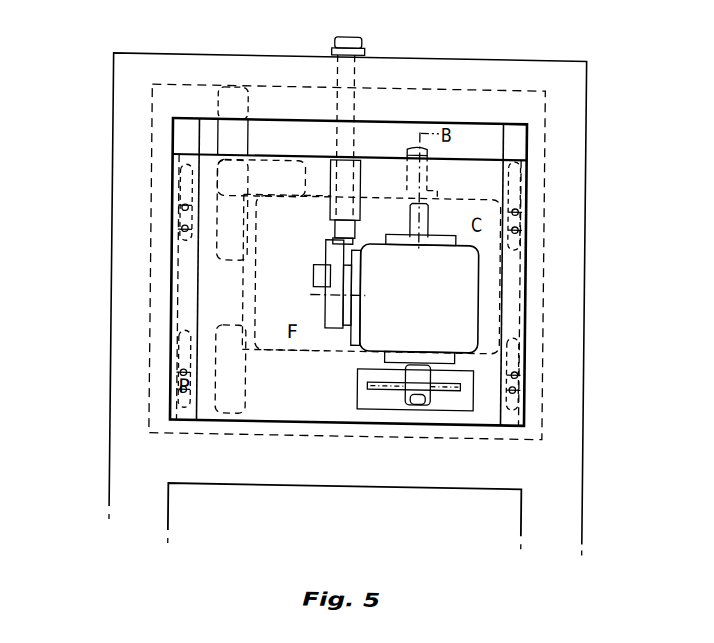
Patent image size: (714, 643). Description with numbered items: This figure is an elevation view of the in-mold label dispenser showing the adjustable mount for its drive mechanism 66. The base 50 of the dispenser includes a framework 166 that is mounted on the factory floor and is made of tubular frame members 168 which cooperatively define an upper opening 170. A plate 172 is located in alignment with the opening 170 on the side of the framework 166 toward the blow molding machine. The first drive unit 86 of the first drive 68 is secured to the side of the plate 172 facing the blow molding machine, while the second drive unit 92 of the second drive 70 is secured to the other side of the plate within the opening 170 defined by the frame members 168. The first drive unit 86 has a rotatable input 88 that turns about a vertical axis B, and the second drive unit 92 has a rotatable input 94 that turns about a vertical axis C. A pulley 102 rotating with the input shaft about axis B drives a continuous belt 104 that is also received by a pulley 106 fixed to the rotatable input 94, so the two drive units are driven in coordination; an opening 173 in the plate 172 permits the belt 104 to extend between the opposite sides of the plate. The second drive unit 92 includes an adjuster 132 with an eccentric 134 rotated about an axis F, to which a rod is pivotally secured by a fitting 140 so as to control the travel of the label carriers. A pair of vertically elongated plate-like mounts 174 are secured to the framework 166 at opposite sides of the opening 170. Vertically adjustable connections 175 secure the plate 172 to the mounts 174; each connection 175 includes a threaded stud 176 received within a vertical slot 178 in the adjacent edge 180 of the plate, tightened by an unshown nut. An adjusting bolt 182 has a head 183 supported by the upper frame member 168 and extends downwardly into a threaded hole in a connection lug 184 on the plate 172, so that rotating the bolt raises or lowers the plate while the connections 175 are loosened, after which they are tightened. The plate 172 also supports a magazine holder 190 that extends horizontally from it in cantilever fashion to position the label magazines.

The base 50 is at (591, 96).
The drive mechanism 66 is at (428, 133).
The first drive 68 is at (438, 184).
The second drive 70 is at (489, 375).
The first drive unit 86 is at (459, 199).
The rotatable input 88 is at (419, 400).
The second drive unit 92 is at (370, 340).
The rotatable input 94 is at (438, 351).
The pulley 102 is at (393, 390).
The continuous belt 104 is at (385, 388).
The pulley 106 is at (403, 390).
The adjuster 132 is at (320, 259).
The eccentric 134 is at (366, 335).
The fitting 140 is at (316, 282).
The framework 166 is at (588, 432).
The tubular frame members 168 is at (114, 96).
The upper opening 170 is at (386, 146).
The plate 172 is at (273, 150).
The opening 173 is at (369, 406).
The mounts 174 is at (207, 128).
The vertically adjustable connections 175 is at (179, 190).
The threaded stud 176 is at (183, 207).
The vertical slot 178 is at (186, 231).
The edge 180 is at (181, 283).
The adjusting bolt 182 is at (355, 129).
The head 183 is at (345, 41).
The connection lug 184 is at (360, 171).
The magazine holder 190 is at (247, 92).